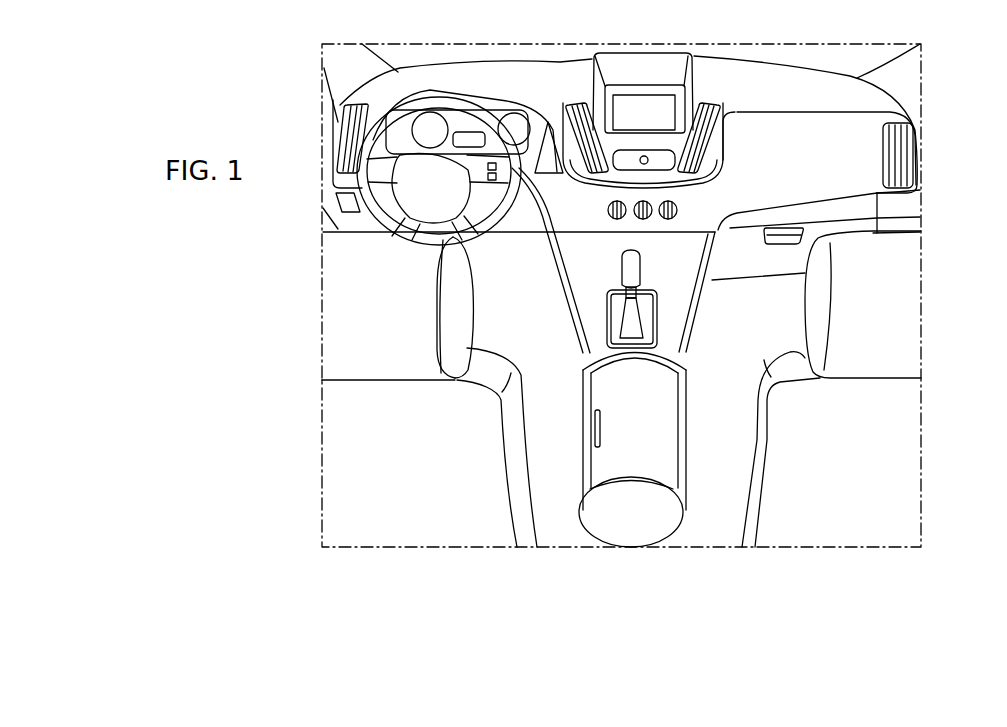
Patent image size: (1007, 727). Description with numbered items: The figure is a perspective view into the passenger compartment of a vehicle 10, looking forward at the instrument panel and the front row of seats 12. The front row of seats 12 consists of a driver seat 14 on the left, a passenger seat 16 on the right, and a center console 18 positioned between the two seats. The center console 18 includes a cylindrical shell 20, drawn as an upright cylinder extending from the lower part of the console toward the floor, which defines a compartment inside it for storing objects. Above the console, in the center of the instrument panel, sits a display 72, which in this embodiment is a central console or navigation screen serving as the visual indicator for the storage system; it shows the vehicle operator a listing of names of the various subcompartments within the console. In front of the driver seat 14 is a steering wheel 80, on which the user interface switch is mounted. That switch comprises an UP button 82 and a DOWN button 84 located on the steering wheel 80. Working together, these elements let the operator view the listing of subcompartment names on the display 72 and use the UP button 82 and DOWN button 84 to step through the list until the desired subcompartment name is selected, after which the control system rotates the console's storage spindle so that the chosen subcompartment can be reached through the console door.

The vehicle 10 is at (941, 409).
The front row of seats 12 is at (345, 503).
The driver seat 14 is at (411, 469).
The passenger seat 16 is at (856, 467).
The center console 18 is at (716, 260).
The cylindrical shell 20 is at (617, 535).
The display 72 is at (653, 123).
The steering wheel 80 is at (417, 96).
The UP button 82 is at (494, 158).
The DOWN button 84 is at (470, 220).